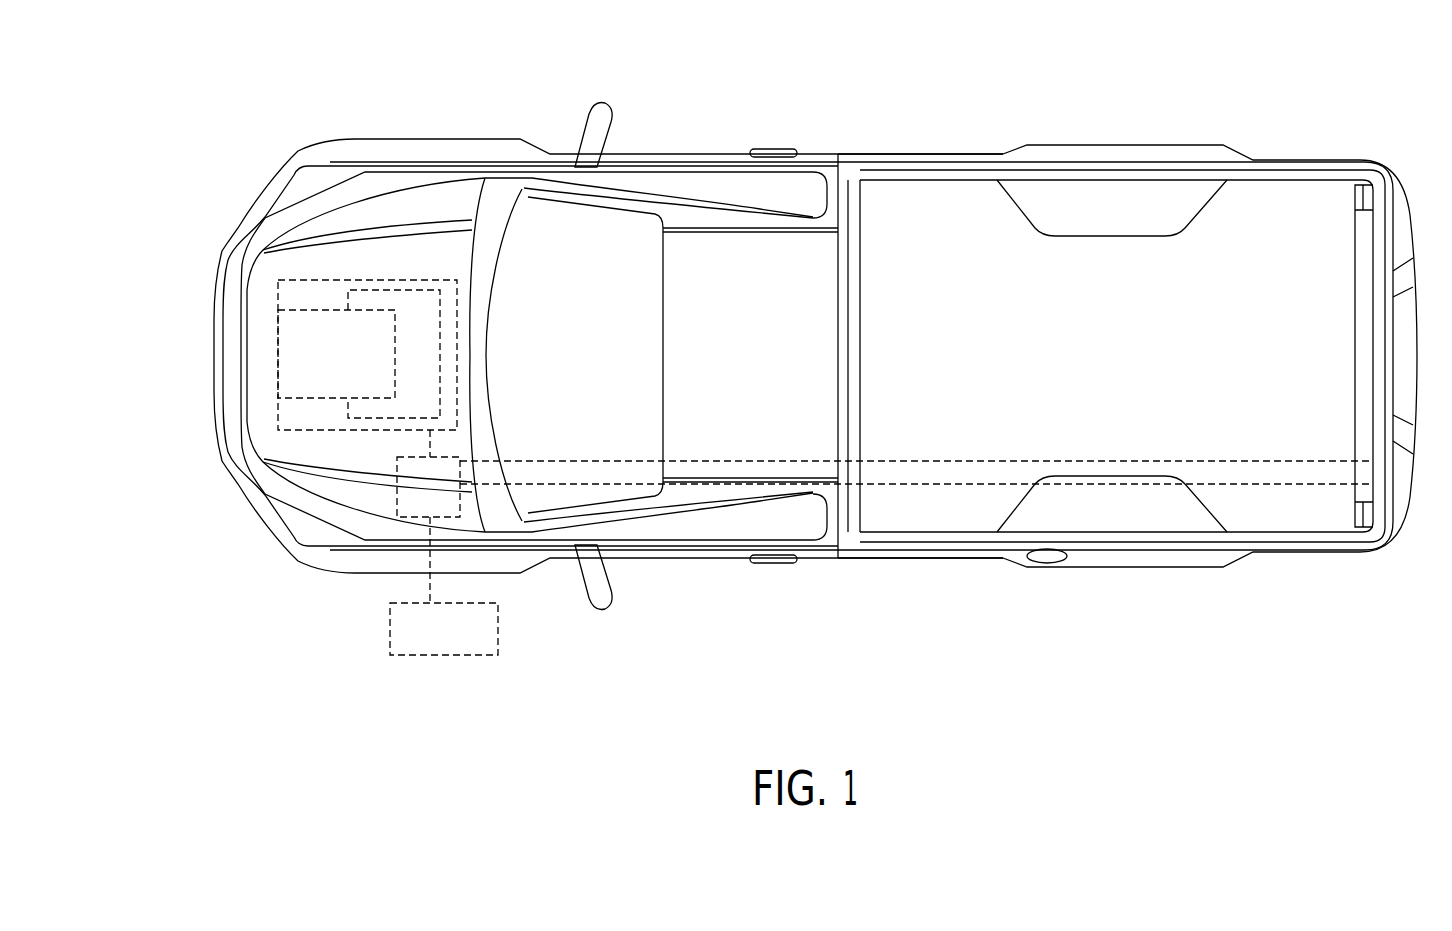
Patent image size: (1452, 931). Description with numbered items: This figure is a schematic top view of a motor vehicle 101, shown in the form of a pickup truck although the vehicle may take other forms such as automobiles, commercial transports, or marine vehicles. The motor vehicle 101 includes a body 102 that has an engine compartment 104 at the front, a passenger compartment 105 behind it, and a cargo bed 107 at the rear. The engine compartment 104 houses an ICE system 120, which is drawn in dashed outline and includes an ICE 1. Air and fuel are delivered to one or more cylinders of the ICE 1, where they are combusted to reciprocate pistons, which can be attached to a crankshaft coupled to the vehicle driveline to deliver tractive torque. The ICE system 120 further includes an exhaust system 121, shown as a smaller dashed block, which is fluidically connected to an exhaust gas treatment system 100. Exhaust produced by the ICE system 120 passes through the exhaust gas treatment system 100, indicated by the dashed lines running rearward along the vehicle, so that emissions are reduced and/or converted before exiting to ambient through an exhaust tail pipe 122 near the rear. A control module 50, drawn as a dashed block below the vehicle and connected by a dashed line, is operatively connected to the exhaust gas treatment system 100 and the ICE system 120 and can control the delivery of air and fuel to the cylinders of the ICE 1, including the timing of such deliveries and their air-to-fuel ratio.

The internal combustion engine (ICE) 1 is at (283, 292).
The control module 50 is at (494, 658).
The exhaust gas treatment system 100 is at (321, 440).
The motor vehicle 101 is at (1160, 600).
The body 102 is at (914, 562).
The engine compartment 104 is at (382, 218).
The passenger compartment 105 is at (603, 222).
The cargo bed 107 is at (976, 220).
The ICE system 120 is at (303, 372).
The exhaust system 121 is at (388, 502).
The exhaust tail pipe 122 is at (1241, 495).